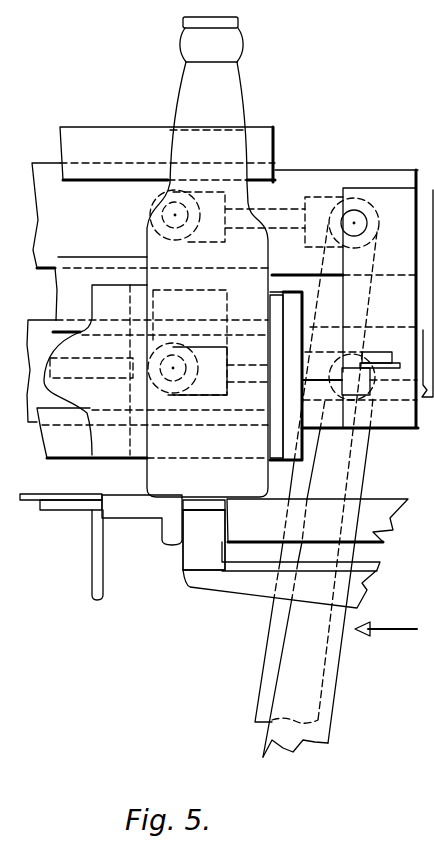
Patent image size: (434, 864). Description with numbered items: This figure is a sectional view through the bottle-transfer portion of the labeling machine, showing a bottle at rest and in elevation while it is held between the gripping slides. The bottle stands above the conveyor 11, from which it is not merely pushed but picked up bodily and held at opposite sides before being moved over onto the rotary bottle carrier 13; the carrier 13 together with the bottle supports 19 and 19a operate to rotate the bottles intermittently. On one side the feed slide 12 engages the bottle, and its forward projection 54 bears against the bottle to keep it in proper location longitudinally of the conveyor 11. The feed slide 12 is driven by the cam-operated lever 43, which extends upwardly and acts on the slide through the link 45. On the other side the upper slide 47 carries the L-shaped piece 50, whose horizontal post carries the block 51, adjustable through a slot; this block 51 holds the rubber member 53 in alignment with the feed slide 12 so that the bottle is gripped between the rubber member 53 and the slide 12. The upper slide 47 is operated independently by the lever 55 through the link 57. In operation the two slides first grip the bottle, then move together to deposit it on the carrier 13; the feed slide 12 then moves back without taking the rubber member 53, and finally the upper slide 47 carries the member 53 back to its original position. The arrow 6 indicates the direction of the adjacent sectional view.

The direction of view arrow 6 is at (386, 616).
The conveyor 11 is at (27, 510).
The feed slide 12 is at (42, 330).
The rotary bottle carrier 13 is at (183, 568).
The bottle support 19 is at (150, 518).
The bottle support 19a is at (375, 533).
The lever 43 is at (363, 472).
The link 45 is at (257, 380).
The upper slide 47 is at (368, 178).
The L-shaped piece 50 is at (348, 298).
The block 51 is at (312, 385).
The rubber member 53 is at (277, 293).
The forward projection 54 is at (226, 440).
The lever 55 is at (263, 671).
The link 57 is at (286, 214).